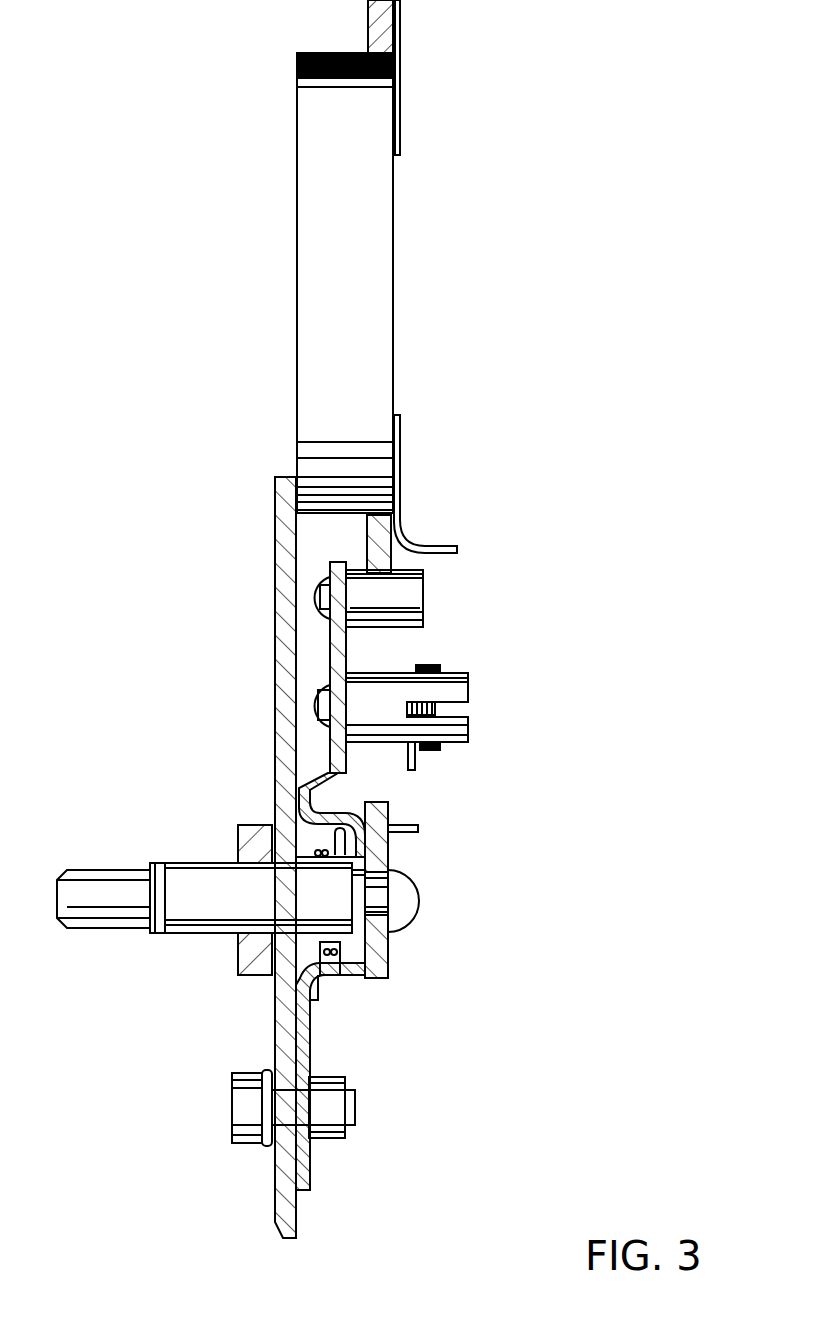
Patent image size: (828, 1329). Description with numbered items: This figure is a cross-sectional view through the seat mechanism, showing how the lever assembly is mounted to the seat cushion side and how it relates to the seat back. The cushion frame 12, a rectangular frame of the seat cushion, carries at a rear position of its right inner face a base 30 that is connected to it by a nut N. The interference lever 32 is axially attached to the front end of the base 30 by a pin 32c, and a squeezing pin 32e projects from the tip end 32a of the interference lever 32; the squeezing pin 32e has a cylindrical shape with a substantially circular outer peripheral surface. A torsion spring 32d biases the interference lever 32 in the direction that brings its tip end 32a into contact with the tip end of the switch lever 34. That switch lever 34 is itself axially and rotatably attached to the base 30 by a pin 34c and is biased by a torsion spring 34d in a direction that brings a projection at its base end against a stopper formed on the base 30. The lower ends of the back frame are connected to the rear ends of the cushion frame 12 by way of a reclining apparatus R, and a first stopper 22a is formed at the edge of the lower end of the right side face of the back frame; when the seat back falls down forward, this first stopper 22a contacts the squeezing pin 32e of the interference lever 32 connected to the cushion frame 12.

The first stopper 22a is at (380, 33).
The reclining apparatus R is at (345, 291).
The cushion frame 12 is at (283, 610).
The interference lever 32 is at (348, 643).
The tip end 32a is at (423, 577).
The squeezing pin 32e is at (410, 603).
The pin 32c is at (463, 688).
The torsion spring 32d is at (415, 745).
The switch lever 34 is at (390, 853).
The pin 34c is at (398, 898).
The torsion spring 34d is at (380, 955).
The base 30 is at (300, 1035).
The nut N is at (335, 1105).